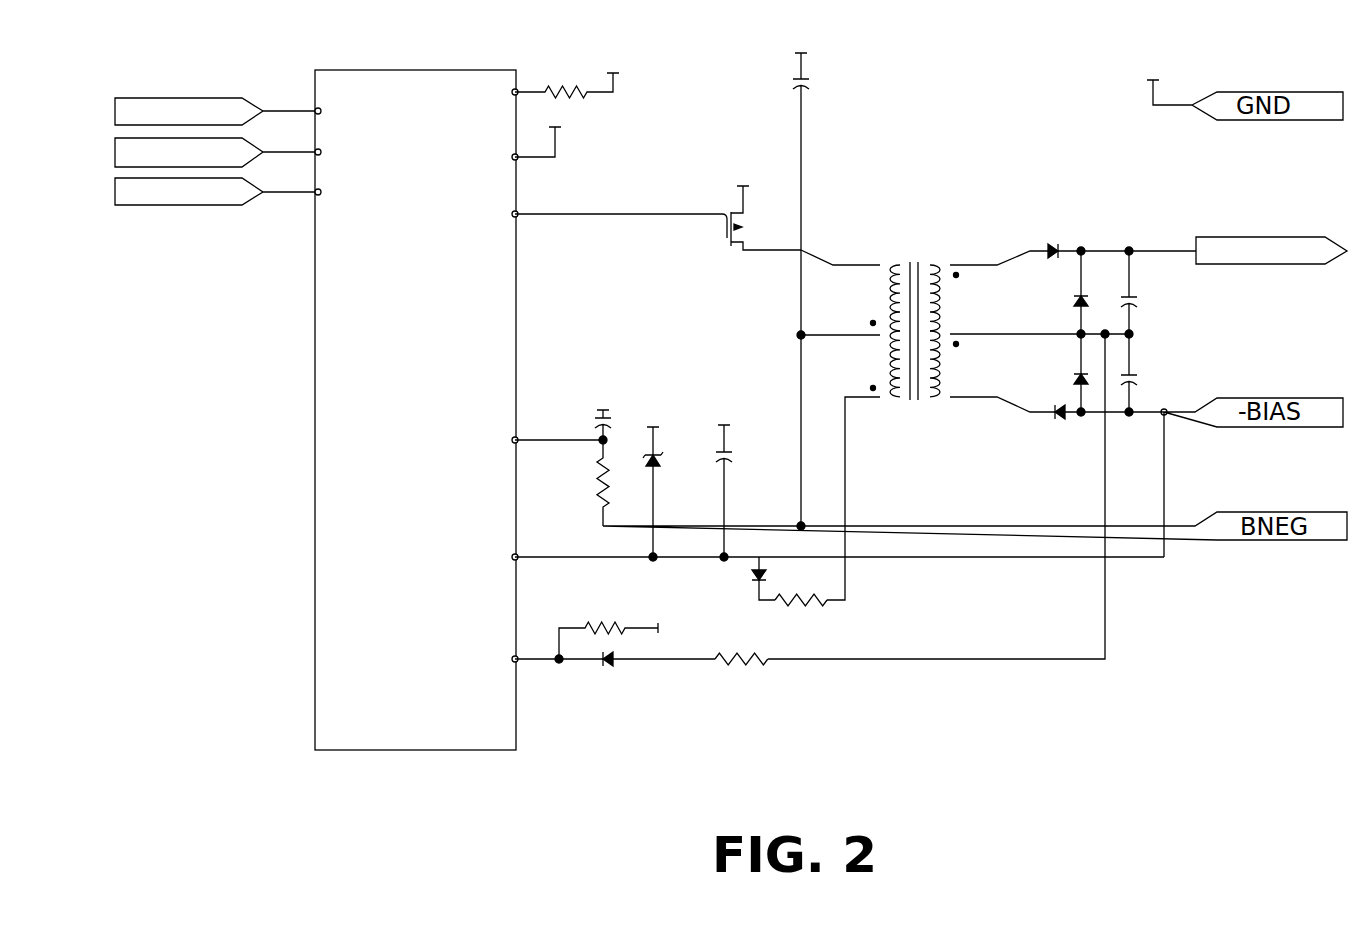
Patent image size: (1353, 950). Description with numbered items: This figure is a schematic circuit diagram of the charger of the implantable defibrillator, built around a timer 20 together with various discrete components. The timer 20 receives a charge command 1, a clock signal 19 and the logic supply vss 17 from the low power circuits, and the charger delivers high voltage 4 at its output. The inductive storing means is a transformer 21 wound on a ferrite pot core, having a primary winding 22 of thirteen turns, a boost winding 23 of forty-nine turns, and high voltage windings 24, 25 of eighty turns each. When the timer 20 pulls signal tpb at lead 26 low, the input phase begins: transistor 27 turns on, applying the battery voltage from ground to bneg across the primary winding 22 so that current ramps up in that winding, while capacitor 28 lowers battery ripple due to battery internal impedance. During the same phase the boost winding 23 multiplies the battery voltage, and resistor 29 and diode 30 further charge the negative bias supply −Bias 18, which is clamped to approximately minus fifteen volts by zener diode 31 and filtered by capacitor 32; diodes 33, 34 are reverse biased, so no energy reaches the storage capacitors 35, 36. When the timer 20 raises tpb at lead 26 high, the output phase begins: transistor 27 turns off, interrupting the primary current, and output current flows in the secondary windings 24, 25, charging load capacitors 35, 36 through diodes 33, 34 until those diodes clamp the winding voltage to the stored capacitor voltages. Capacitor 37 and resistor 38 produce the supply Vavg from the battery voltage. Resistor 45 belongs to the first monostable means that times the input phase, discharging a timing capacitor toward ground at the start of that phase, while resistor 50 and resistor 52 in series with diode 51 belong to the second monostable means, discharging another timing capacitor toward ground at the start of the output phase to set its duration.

The charge command 1 is at (175, 98).
The clock signal 19 is at (115, 155).
The logic supply vss 17 is at (157, 205).
The timer 20 is at (424, 332).
The resistor 45 is at (577, 92).
The lead 26 is at (635, 214).
The transistor 27 is at (725, 229).
The capacitor 28 is at (801, 90).
The transformer 21 is at (913, 265).
The primary winding 22 is at (873, 292).
The boost winding 23 is at (873, 358).
The high voltage winding 25 is at (954, 290).
The high voltage winding 24 is at (954, 355).
The diode 33 is at (1053, 245).
The high voltage 4 is at (1157, 251).
The storage capacitor 35 is at (1137, 301).
The storage capacitor 36 is at (1137, 379).
The diode 34 is at (1058, 422).
The negative bias supply −Bias 18 is at (1145, 558).
The capacitor 37 is at (596, 421).
The resistor 38 is at (597, 482).
The zener diode 31 is at (659, 458).
The capacitor 32 is at (728, 453).
The diode 30 is at (752, 578).
The resistor 29 is at (815, 606).
The resistor 50 is at (608, 622).
The diode 51 is at (610, 667).
The resistor 52 is at (745, 667).